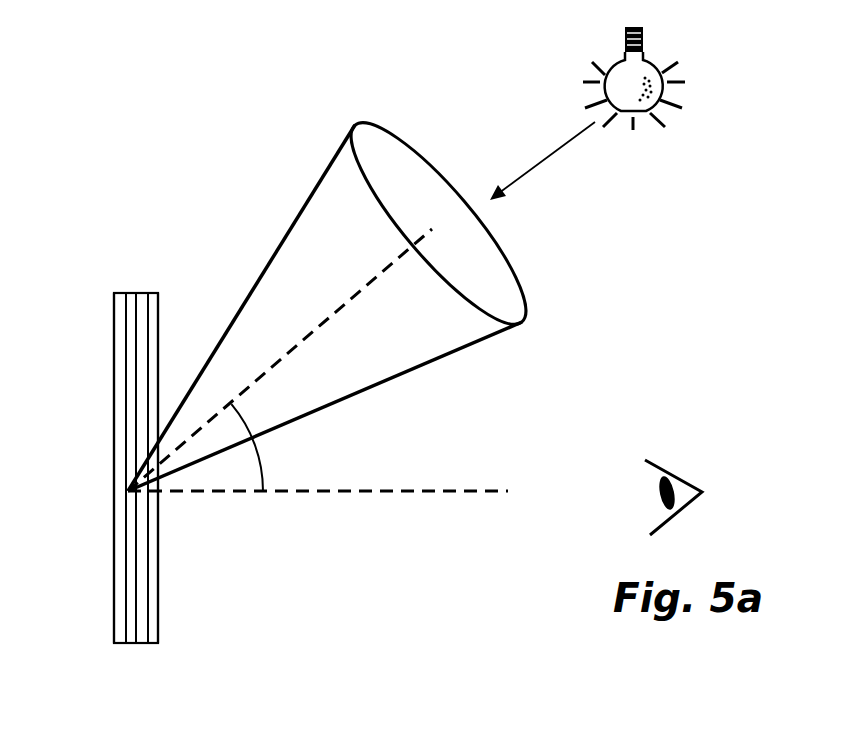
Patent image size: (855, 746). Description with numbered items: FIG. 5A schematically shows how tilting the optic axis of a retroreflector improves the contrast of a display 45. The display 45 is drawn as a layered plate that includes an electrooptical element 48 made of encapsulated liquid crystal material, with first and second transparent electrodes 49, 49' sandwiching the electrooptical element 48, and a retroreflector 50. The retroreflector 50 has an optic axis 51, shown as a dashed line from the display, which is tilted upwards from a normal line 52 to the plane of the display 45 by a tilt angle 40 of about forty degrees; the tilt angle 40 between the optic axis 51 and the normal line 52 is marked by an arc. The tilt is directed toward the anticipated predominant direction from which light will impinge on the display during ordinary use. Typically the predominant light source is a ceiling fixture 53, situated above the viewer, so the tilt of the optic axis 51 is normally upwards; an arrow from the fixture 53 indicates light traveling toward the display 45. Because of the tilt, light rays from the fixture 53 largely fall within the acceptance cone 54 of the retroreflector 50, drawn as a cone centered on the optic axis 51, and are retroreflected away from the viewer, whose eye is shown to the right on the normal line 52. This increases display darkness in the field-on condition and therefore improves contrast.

The display 45 is at (137, 658).
The electrooptical element 48 is at (148, 577).
The first transparent electrode 49 is at (206, 468).
The second transparent electrode 49' is at (81, 468).
The retroreflector 50 is at (114, 537).
The optic axis 51 is at (250, 385).
The normal line 52 is at (360, 495).
The ceiling fixture 53 is at (697, 82).
The acceptance cone 54 is at (340, 148).
The angle of incidence 40 is at (265, 467).